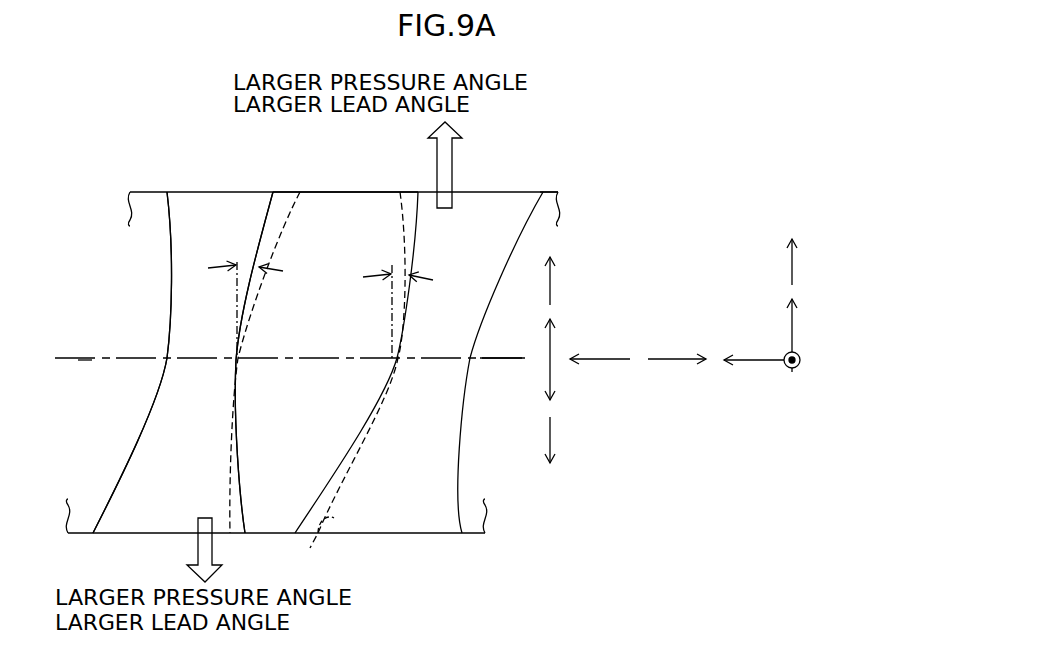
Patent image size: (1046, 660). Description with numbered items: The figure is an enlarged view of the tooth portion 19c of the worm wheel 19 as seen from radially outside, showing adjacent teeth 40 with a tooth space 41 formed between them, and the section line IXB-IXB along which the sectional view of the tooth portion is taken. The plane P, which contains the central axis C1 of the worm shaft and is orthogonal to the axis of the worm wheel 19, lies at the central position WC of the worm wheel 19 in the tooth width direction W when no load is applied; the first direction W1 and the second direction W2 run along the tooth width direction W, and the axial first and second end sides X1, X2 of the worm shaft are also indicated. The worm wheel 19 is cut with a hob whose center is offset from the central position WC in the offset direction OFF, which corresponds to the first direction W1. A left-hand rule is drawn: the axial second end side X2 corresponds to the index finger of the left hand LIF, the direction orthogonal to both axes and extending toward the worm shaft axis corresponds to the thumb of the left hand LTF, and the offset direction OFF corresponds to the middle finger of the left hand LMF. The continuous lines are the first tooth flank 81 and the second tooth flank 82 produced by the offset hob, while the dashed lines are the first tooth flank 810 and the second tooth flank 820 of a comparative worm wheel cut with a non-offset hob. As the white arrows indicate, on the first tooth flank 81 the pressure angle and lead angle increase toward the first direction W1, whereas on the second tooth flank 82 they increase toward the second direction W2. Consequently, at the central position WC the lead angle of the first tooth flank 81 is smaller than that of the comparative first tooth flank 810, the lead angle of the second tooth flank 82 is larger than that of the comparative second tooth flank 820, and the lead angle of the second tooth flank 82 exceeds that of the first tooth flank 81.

The worm wheel 19 is at (549, 147).
The tooth portion 19c is at (555, 191).
The teeth 40 is at (190, 200).
The tooth spaces 41 is at (336, 222).
The first tooth flank 81 is at (170, 270).
The second tooth flank 82 is at (239, 485).
The first tooth flank 810 is at (344, 386).
The second tooth flank 820 is at (302, 200).
The central axis C1 is at (92, 357).
The plane P is at (78, 362).
The tooth width direction W is at (548, 356).
The first direction W1 is at (553, 290).
The second direction W2 is at (553, 440).
The central position WC is at (500, 362).
The axial first end side X1 is at (676, 362).
The axial second end side X2 is at (612, 362).
The index finger of the left hand LIF is at (753, 357).
The middle finger of the left hand LMF is at (794, 330).
The thumb of the left hand LTF is at (792, 370).
The offset direction OFF is at (794, 272).
The line IXB- IXB is at (203, 354).